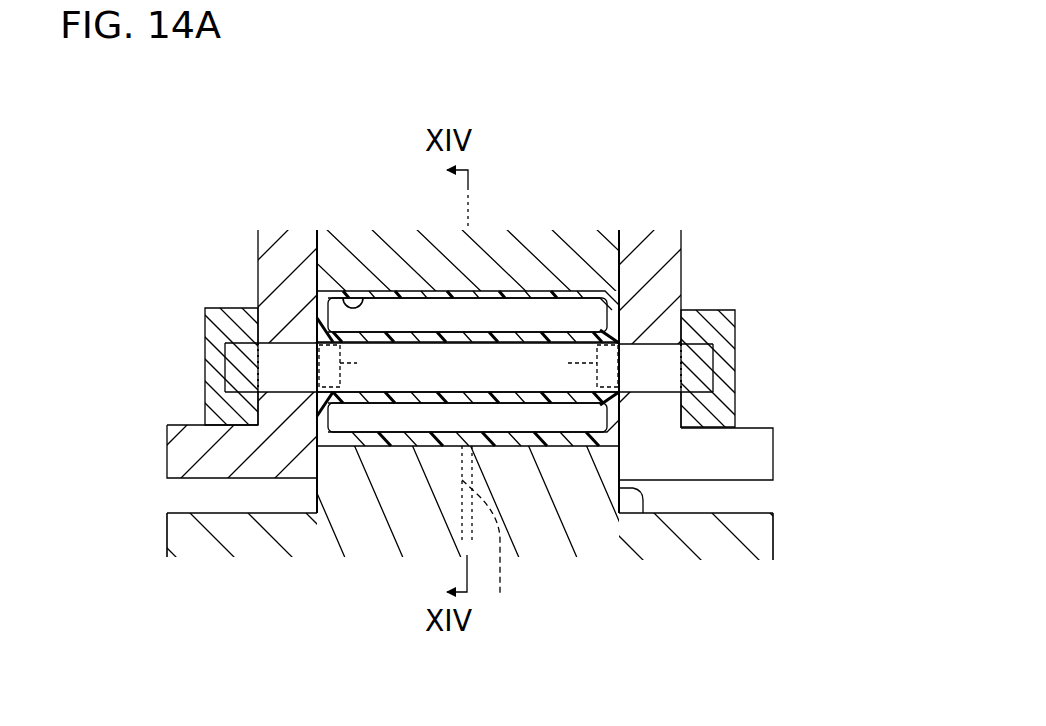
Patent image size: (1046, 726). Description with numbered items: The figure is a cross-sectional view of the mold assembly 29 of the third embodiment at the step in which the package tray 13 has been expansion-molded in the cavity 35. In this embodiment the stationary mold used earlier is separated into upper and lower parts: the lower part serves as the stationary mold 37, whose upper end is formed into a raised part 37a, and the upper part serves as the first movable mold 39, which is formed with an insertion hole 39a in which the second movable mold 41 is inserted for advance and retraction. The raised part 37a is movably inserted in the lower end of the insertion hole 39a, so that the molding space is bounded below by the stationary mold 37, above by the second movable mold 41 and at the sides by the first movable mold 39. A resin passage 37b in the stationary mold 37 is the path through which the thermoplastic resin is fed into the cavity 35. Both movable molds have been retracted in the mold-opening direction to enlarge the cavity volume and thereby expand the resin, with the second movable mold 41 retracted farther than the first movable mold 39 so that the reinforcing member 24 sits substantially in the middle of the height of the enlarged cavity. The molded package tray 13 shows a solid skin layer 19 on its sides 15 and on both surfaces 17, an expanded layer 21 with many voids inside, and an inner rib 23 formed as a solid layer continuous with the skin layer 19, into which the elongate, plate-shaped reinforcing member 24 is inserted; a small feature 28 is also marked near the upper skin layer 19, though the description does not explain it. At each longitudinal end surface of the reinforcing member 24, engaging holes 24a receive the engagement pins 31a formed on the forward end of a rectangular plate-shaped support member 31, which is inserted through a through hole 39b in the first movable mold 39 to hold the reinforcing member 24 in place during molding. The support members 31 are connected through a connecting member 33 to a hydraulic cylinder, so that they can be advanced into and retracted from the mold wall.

The package tray 13 is at (440, 284).
The sides 15 is at (330, 332).
The surfaces 17 is at (510, 290).
The skin layer 19 is at (482, 288).
The expanded layer 21 is at (390, 317).
The inner ribs 23 is at (552, 331).
The reinforcing member 24 is at (495, 380).
The engaging holes 24a is at (468, 366).
The engagement pins 31a is at (607, 366).
The recess 28 is at (343, 293).
The mold assembly 29 is at (761, 190).
The support member 31 is at (285, 375).
The connecting member 33 is at (205, 322).
The cavity 35 is at (402, 420).
The stationary mold 37 is at (702, 527).
The raised part 37a is at (650, 492).
The resin passage 37b is at (497, 550).
The first movable mold 39 is at (773, 452).
The insertion hole 39a is at (288, 280).
The through hole 39b is at (287, 343).
The second movable mold 41 is at (547, 243).